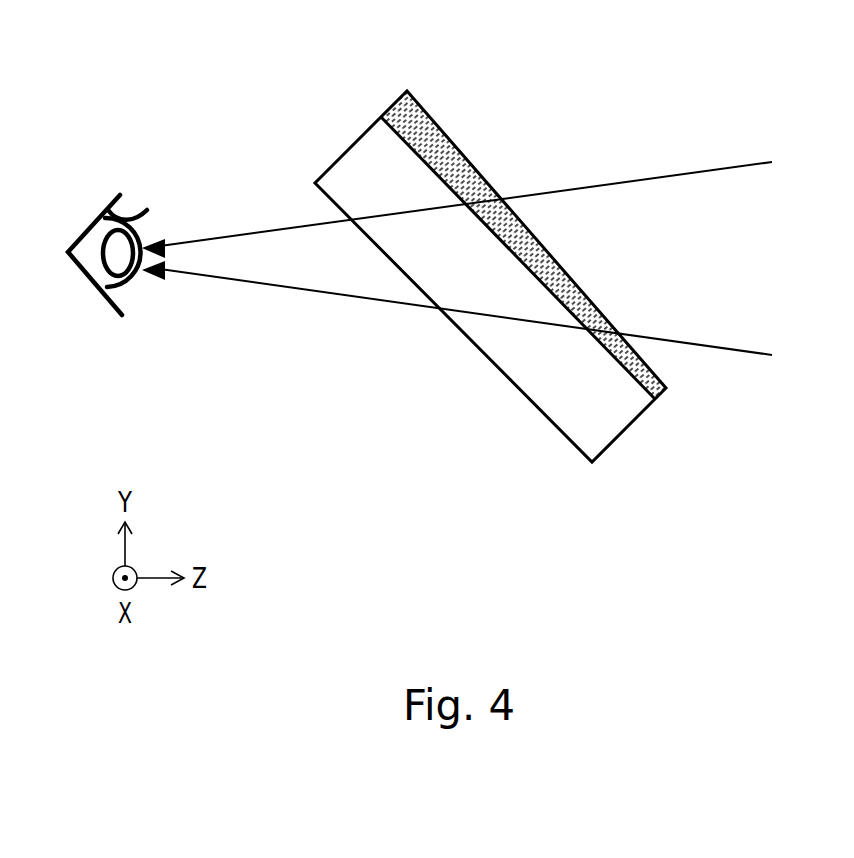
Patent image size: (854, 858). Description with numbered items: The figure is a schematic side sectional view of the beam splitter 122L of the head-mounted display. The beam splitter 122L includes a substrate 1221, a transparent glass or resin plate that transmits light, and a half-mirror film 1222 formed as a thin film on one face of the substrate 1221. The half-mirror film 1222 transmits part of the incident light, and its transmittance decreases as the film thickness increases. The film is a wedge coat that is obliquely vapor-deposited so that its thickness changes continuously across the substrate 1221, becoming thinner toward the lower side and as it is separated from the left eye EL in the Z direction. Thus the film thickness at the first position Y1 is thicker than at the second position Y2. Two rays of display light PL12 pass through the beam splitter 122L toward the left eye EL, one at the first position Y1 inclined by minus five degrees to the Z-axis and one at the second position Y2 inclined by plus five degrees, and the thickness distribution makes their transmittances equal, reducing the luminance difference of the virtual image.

The beam splitter 122L is at (471, 244).
The substrate 1221 is at (548, 418).
The half-mirror film 1222 is at (431, 118).
The display light PL12 is at (235, 234).
The first position Y1 is at (503, 199).
The second position Y2 is at (621, 334).
The left eye EL is at (83, 272).